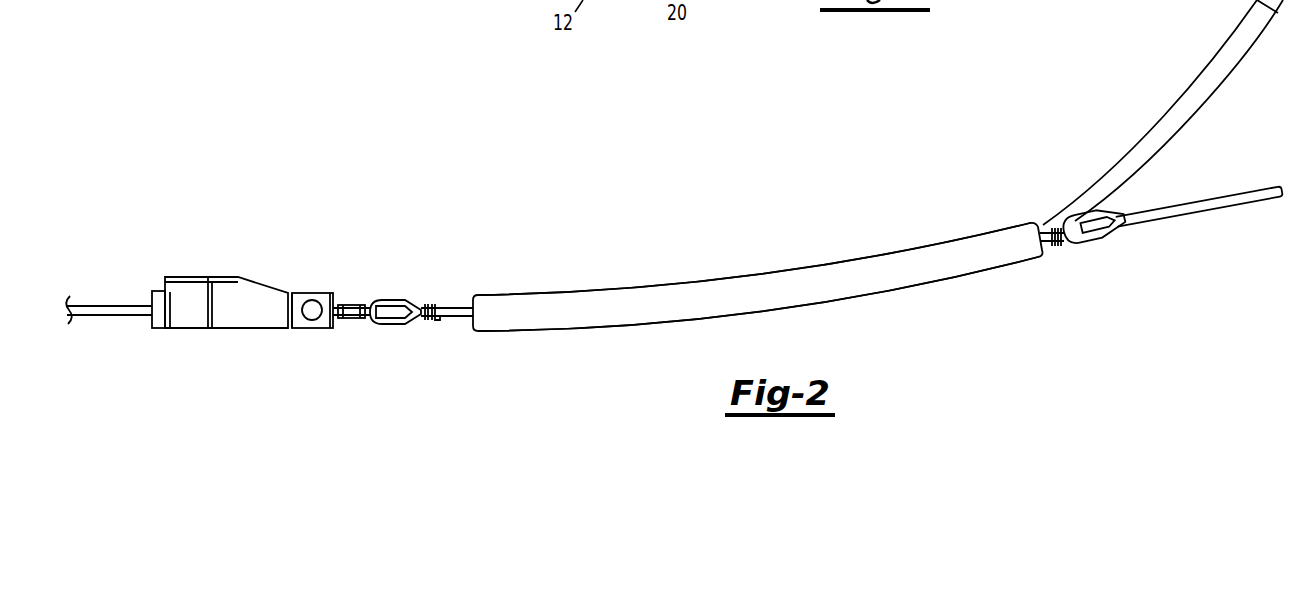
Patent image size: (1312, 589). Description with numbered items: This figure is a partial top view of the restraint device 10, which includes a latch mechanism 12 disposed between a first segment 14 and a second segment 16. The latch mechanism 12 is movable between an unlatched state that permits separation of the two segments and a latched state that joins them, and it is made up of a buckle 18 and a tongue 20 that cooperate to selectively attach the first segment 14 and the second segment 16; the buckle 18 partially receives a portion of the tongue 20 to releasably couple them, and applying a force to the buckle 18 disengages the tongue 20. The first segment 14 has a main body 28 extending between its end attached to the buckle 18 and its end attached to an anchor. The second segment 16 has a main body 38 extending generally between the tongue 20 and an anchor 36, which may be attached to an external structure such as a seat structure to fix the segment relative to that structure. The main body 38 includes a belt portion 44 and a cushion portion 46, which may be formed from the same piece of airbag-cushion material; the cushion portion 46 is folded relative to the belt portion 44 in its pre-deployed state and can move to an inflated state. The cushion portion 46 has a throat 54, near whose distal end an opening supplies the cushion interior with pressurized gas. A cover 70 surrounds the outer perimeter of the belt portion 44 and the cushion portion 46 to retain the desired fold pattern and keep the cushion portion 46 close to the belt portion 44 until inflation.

The restraint device 10 is at (137, 226).
The latch mechanism 12 is at (244, 275).
The first segment 14 is at (126, 324).
The second segment 16 is at (675, 278).
The buckle 18 is at (176, 289).
The tongue 20 is at (356, 303).
The main body 28 is at (78, 304).
The anchor 36 is at (1263, 183).
The main body 38 is at (460, 318).
The belt portion 44 is at (448, 308).
The cushion portion 46 is at (787, 288).
The throat 54 is at (1236, 70).
The cover 70 is at (715, 283).